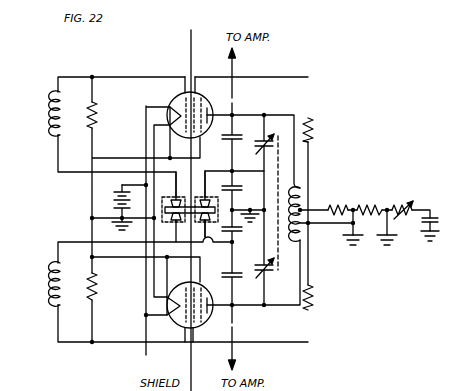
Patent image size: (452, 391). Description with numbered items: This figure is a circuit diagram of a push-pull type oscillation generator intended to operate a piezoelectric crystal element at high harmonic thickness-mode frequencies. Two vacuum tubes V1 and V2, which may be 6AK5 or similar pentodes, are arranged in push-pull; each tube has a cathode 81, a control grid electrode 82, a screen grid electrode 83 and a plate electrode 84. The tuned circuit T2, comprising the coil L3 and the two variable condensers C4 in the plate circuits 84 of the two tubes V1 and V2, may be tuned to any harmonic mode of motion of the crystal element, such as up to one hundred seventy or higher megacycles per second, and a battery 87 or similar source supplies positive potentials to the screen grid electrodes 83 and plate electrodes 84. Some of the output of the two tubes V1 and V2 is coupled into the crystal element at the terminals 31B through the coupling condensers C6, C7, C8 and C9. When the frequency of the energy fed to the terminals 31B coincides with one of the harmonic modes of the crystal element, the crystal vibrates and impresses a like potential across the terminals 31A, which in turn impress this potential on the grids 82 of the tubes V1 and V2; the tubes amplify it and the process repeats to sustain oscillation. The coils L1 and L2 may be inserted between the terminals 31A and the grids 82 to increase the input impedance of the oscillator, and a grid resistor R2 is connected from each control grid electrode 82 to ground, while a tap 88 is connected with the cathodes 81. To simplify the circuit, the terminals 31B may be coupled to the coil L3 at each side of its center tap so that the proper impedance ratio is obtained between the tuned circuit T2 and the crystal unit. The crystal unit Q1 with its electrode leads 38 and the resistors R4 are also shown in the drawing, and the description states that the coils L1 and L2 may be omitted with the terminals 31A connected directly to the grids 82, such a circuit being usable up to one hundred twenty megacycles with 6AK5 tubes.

The tap 88 is at (191, 58).
The vacuum tube V1 is at (204, 95).
The vacuum tube V2 is at (205, 283).
The cathode 81 is at (176, 93).
The control grid electrode 82 is at (184, 78).
The screen grid electrode 83 is at (201, 139).
The plate electrode 84 is at (227, 93).
The coil L1 is at (53, 115).
The coil L2 is at (53, 296).
The coil L3 is at (309, 187).
The grid resistor R2 is at (98, 115).
The plate load resistor R4 is at (314, 131).
The piezoelectric crystal unit Q1 is at (162, 200).
The terminals 31A is at (172, 200).
The terminals 31B is at (212, 198).
The crystal electrode leads 38 is at (178, 169).
The variable condenser C4 is at (257, 210).
The coupling condenser C6 is at (252, 131).
The coupling condenser C7 is at (243, 199).
The coupling condenser C8 is at (242, 250).
The coupling condenser C9 is at (238, 298).
The tuned circuit T2 is at (285, 208).
The battery 87 is at (425, 226).